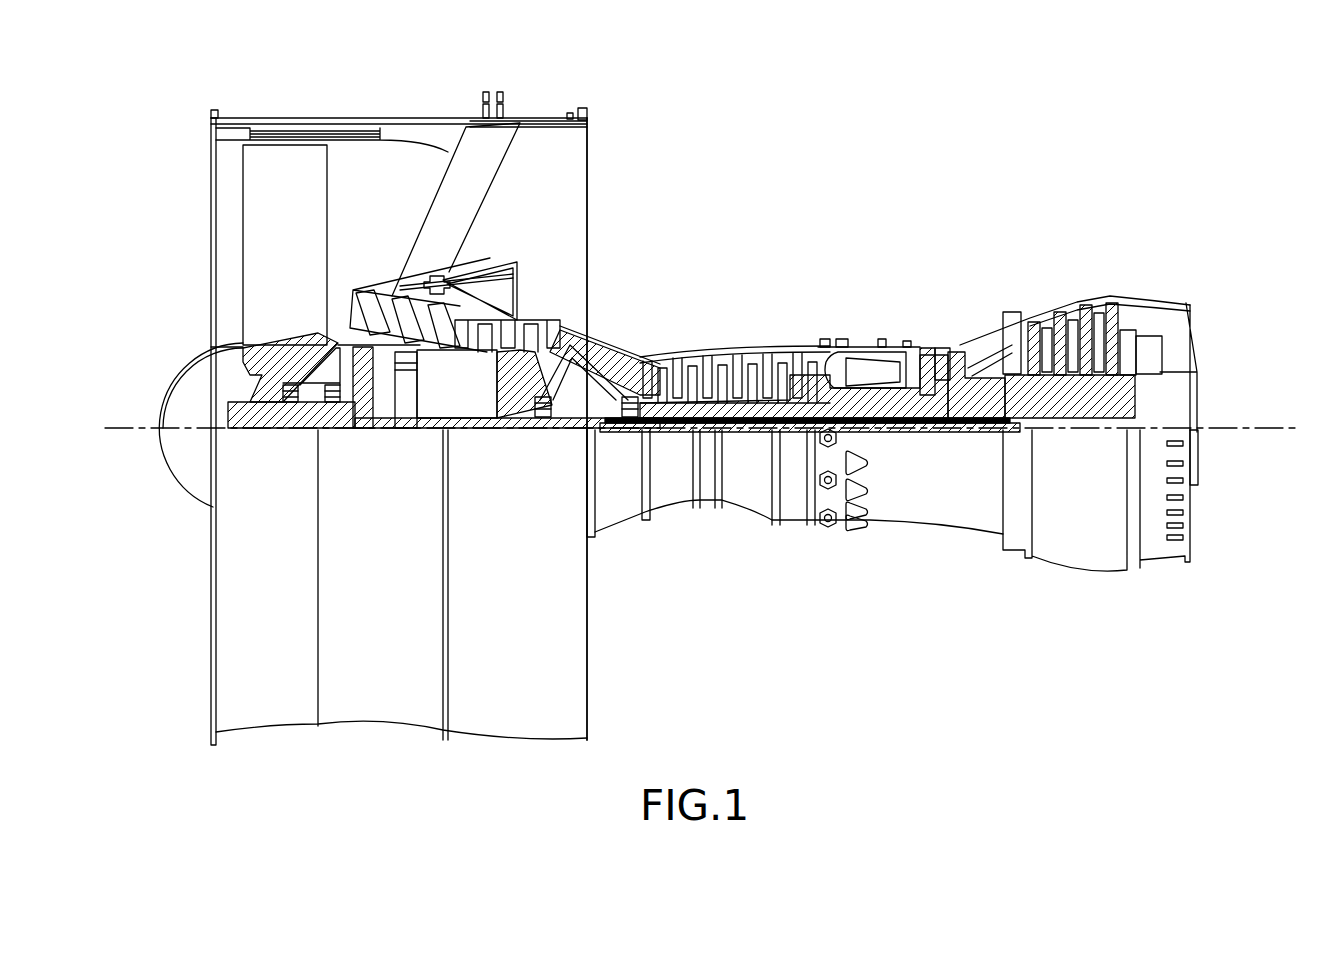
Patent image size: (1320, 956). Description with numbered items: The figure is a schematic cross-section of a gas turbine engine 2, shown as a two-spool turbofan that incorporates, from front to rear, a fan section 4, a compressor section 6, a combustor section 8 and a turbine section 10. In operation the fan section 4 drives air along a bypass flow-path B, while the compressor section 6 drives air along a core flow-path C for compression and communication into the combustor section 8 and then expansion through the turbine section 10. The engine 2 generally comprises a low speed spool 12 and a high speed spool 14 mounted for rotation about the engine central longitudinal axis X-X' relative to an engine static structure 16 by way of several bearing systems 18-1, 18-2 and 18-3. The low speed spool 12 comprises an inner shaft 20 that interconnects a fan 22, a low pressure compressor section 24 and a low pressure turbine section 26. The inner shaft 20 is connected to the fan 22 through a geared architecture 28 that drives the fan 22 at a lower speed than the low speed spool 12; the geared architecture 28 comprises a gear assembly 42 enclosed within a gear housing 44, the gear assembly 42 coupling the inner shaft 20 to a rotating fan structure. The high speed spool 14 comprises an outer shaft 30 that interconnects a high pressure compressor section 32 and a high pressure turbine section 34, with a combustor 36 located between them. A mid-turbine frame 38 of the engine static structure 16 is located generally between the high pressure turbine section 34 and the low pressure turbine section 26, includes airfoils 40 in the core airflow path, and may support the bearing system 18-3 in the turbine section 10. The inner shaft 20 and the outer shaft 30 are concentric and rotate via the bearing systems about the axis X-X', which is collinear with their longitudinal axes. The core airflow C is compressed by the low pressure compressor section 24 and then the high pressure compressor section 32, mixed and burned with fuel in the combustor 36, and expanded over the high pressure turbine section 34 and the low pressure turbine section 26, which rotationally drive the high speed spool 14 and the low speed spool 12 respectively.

The gas turbine engine 2 is at (912, 170).
The fan section 4 is at (445, 103).
The compressor section 6 is at (452, 230).
The combustor section 8 is at (922, 230).
The turbine section 10 is at (1130, 230).
The low speed spool 12 is at (757, 442).
The high speed spool 14 is at (790, 385).
The engine static structure 16 is at (360, 715).
The bearing system 18-1 is at (288, 418).
The bearing system 18-2 is at (541, 420).
The bearing system 18-3 is at (970, 428).
The inner shaft 20 is at (612, 432).
The fan 22 is at (296, 250).
The low pressure compressor section 24 is at (518, 327).
The low pressure turbine section 26 is at (1070, 312).
The geared architecture 28 is at (410, 442).
The outer shaft 30 is at (872, 408).
The high pressure compressor section 32 is at (730, 395).
The high pressure turbine section 34 is at (940, 350).
The combustor 36 is at (865, 368).
The mid-turbine frame 38 is at (1000, 352).
The airfoils 40 is at (985, 358).
The gear assembly 42 is at (415, 398).
The gear housing 44 is at (410, 368).
The bypass flow-path B is at (408, 203).
The core flow-path C is at (345, 308).
The engine central longitudinal axis X is at (124, 395).
The engine central longitudinal axis X' is at (1243, 395).